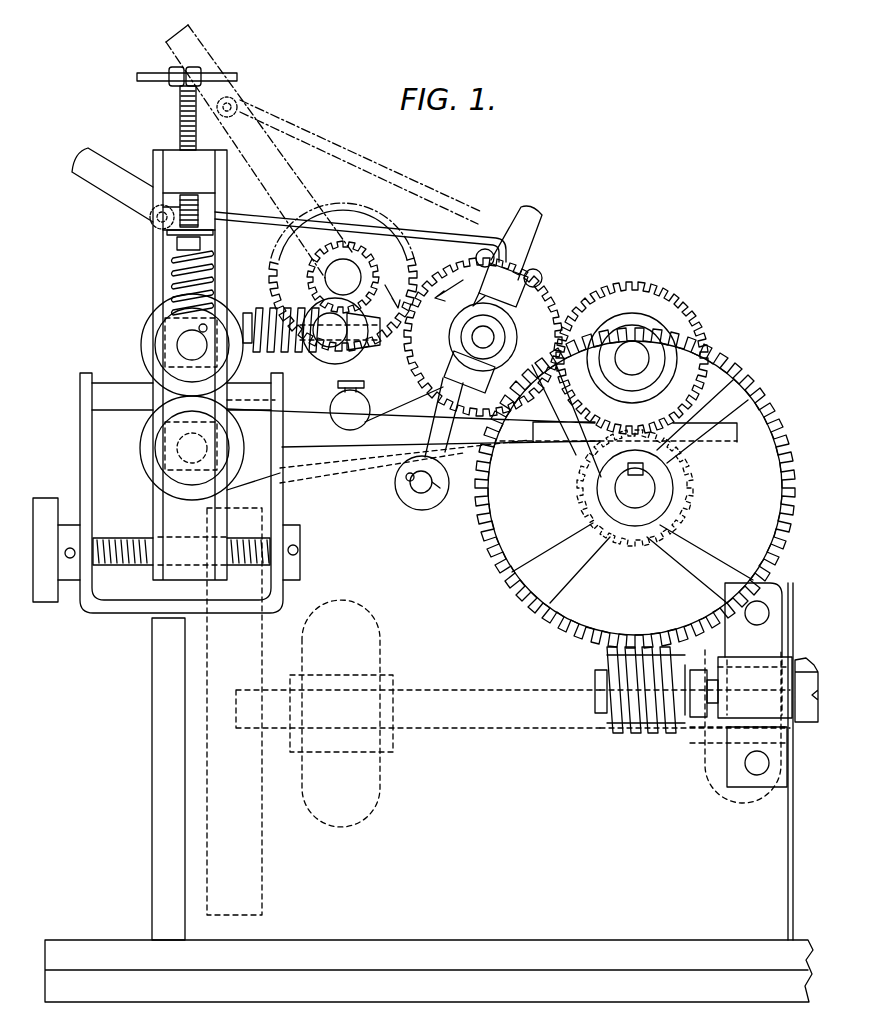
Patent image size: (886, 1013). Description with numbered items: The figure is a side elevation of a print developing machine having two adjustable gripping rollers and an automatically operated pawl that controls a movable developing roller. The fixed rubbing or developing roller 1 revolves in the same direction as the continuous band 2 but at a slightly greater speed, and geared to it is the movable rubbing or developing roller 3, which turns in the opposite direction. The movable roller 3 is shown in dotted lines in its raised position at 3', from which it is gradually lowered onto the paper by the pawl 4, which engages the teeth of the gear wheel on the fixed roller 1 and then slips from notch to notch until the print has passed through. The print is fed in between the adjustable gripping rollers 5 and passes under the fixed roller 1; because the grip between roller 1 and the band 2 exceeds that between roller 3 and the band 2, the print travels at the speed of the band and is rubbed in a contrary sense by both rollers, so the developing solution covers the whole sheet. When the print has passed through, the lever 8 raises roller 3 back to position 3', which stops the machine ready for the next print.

The fixed rubbing or developing roller 1 is at (550, 302).
The continuous band 2 is at (436, 425).
The movable rubbing or developing roller 3 is at (343, 280).
The raised position of the movable roller 3' is at (342, 216).
The pawl 4 is at (348, 153).
The adjustable gripping rollers 5 is at (137, 338).
The lever 8 is at (219, 51).